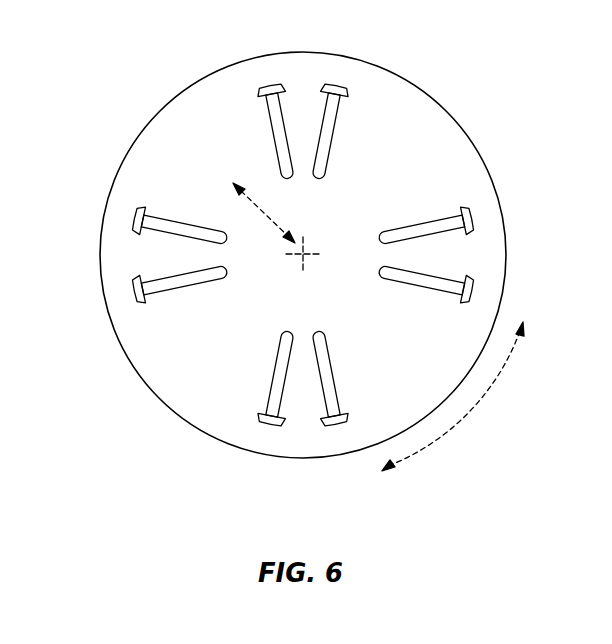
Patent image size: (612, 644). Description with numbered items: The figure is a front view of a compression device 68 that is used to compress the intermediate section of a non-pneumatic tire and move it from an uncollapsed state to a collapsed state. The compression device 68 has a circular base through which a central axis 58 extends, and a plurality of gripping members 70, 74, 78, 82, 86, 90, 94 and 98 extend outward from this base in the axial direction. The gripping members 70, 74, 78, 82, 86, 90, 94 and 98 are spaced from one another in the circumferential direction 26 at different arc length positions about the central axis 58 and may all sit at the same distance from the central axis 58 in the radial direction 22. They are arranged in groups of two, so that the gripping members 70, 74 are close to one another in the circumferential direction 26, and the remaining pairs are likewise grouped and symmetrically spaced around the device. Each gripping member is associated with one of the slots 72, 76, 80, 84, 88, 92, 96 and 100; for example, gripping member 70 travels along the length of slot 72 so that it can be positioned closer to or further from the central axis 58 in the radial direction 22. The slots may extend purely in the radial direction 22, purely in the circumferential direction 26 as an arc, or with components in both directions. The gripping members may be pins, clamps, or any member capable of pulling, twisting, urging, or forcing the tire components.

The compression device 68 is at (112, 73).
The central axis 58 is at (305, 248).
The radial direction 22 is at (275, 220).
The circumferential direction 26 is at (470, 412).
The gripping member 70 is at (248, 107).
The slot 72 is at (264, 110).
The gripping member 74 is at (358, 107).
The slot 76 is at (341, 110).
The gripping member 78 is at (456, 212).
The slot 80 is at (442, 222).
The gripping member 82 is at (459, 299).
The slot 84 is at (442, 288).
The gripping member 86 is at (359, 407).
The slot 88 is at (336, 382).
The gripping member 90 is at (246, 407).
The slot 92 is at (270, 382).
The gripping member 94 is at (149, 299).
The slot 96 is at (158, 290).
The gripping member 98 is at (149, 210).
The slot 100 is at (158, 218).